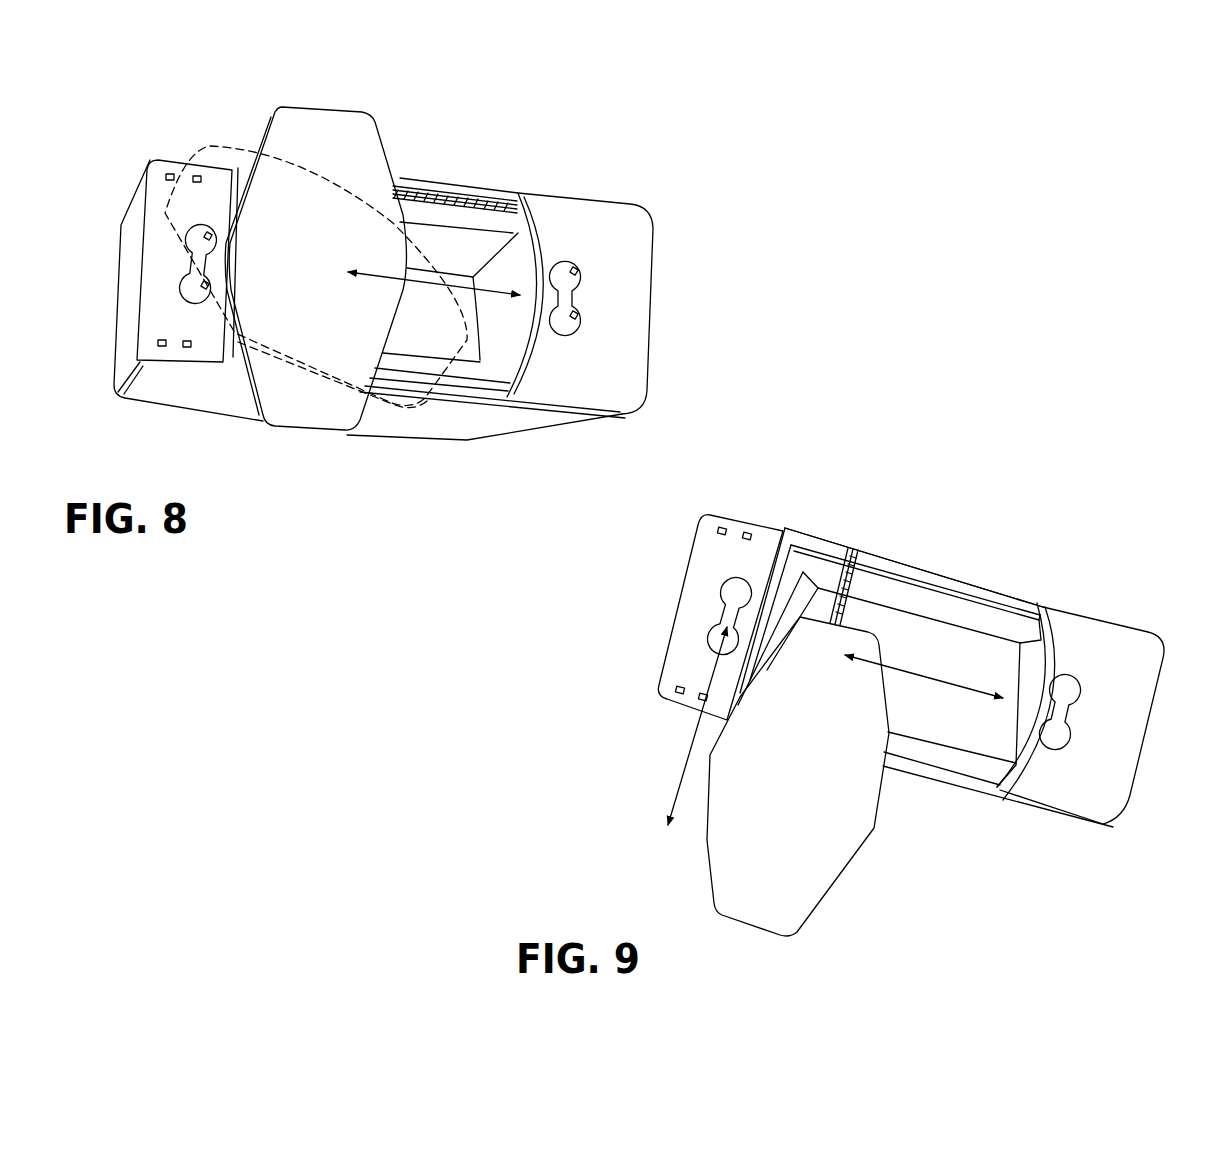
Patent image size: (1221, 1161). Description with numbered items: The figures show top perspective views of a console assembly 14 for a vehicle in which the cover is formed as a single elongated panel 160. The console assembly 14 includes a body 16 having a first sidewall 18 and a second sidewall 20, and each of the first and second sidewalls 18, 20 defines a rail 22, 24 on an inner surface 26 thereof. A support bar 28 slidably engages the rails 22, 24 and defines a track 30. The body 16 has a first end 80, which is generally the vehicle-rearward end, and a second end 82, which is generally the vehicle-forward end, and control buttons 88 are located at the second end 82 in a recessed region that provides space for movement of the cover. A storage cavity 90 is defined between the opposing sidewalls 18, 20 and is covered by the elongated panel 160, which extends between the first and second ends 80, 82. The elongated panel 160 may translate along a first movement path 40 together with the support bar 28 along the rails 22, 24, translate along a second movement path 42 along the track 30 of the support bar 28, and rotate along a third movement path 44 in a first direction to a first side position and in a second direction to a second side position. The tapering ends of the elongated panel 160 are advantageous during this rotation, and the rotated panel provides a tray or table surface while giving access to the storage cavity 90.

In FIG. 8, the console assembly 14 is at (118, 137).
In FIG. 9, the console assembly 14 is at (818, 500).
In FIG. 8, the body 16 is at (463, 442).
In FIG. 8, the first sidewall 18 is at (413, 418).
In FIG. 9, the first sidewall 18 is at (920, 780).
In FIG. 8, the second sidewall 20 is at (493, 190).
In FIG. 9, the second sidewall 20 is at (1029, 602).
In FIG. 8, the rail 22 is at (493, 375).
In FIG. 9, the rail 22 is at (945, 750).
In FIG. 8, the rail 24 is at (468, 192).
In FIG. 9, the rail 24 is at (1004, 602).
In FIG. 8, the inner surface 26 is at (418, 207).
In FIG. 9, the inner surface 26 is at (962, 605).
In FIG. 9, the support bar 28 is at (855, 553).
In FIG. 9, the track 30 is at (843, 560).
In FIG. 8, the first movement path 40 is at (492, 285).
In FIG. 9, the first movement path 40 is at (960, 690).
In FIG. 9, the second movement path 42 is at (703, 718).
In FIG. 8, the third movement path 44 is at (255, 82).
In FIG. 8, the first end 80 is at (655, 235).
In FIG. 9, the first end 80 is at (1163, 677).
In FIG. 8, the second end 82 is at (150, 343).
In FIG. 9, the second end 82 is at (672, 652).
In FIG. 8, the control buttons 88 is at (180, 352).
In FIG. 9, the control buttons 88 is at (743, 525).
In FIG. 8, the storage cavity 90 is at (508, 335).
In FIG. 9, the storage cavity 90 is at (1018, 730).
In FIG. 8, the elongated panel 160 is at (290, 415).
In FIG. 9, the elongated panel 160 is at (762, 900).